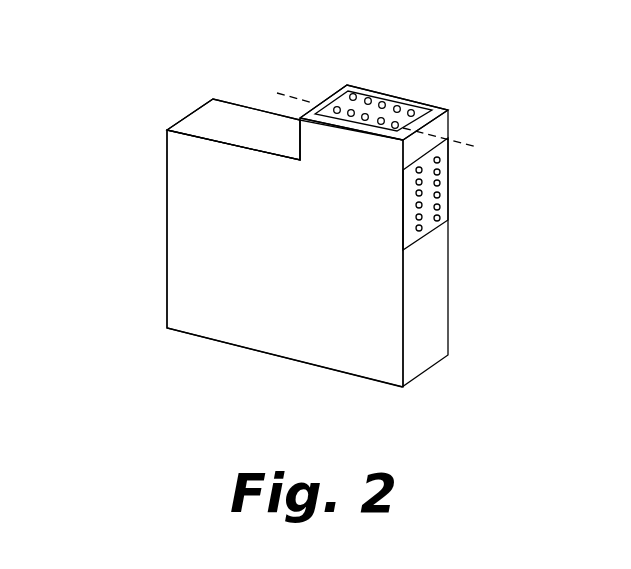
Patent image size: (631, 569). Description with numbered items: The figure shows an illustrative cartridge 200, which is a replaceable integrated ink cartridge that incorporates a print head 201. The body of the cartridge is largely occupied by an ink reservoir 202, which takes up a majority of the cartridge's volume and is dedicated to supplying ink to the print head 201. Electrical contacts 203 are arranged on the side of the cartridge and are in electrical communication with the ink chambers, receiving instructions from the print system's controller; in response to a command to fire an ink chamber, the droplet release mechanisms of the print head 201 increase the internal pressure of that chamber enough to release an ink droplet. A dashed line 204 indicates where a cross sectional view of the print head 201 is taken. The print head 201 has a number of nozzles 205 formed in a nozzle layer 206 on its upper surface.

The cartridge 200 is at (81, 113).
The print head 201 is at (400, 93).
The ink reservoir 202 is at (227, 279).
The electrical contacts 203 is at (448, 221).
The line 204 is at (314, 105).
The nozzles 205 is at (413, 116).
The nozzle layer 206 is at (360, 108).